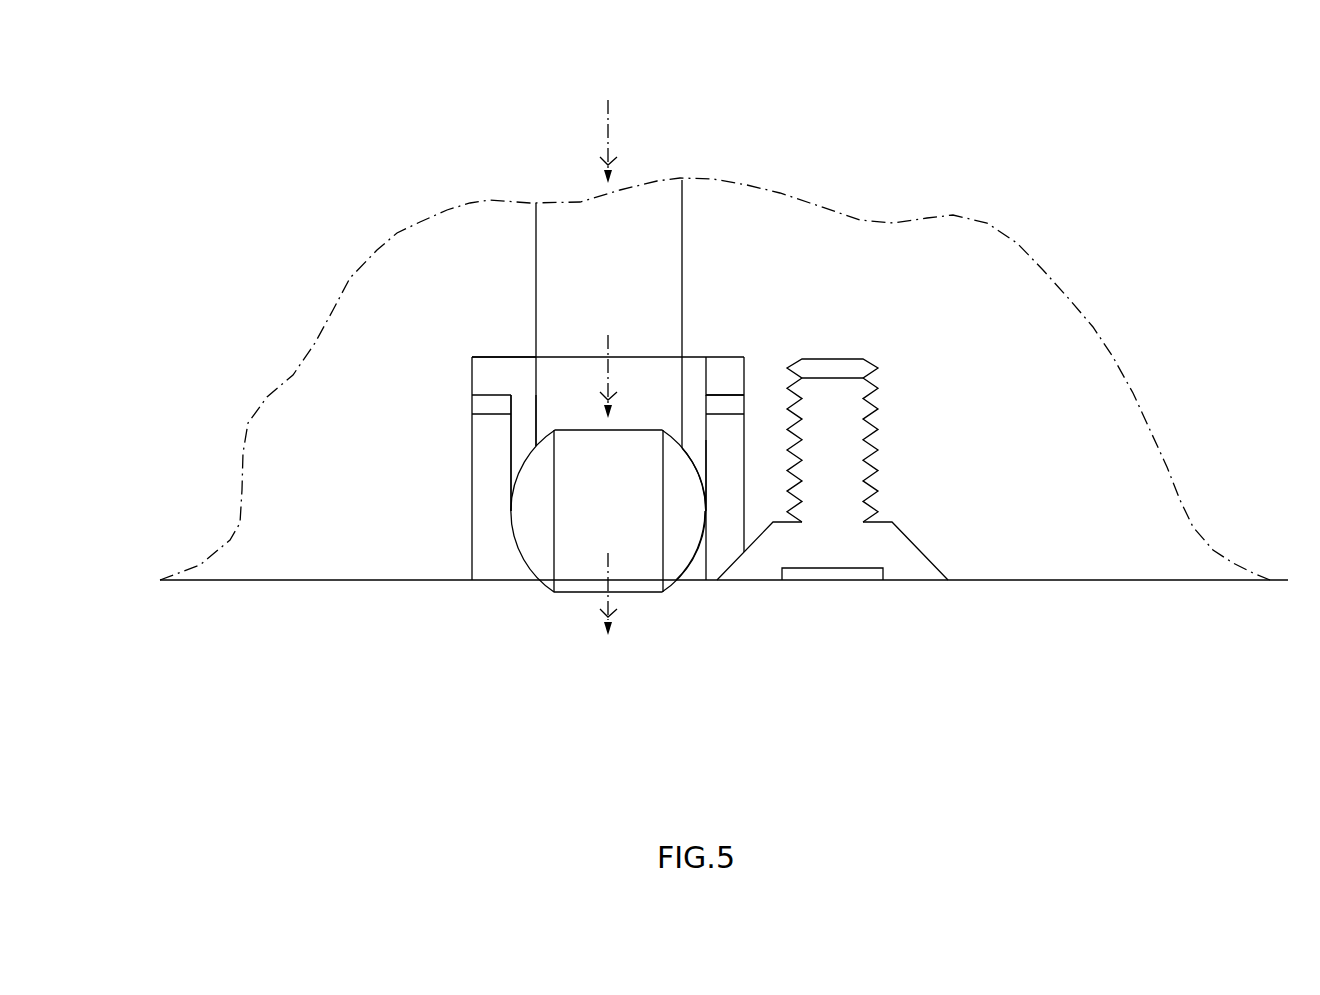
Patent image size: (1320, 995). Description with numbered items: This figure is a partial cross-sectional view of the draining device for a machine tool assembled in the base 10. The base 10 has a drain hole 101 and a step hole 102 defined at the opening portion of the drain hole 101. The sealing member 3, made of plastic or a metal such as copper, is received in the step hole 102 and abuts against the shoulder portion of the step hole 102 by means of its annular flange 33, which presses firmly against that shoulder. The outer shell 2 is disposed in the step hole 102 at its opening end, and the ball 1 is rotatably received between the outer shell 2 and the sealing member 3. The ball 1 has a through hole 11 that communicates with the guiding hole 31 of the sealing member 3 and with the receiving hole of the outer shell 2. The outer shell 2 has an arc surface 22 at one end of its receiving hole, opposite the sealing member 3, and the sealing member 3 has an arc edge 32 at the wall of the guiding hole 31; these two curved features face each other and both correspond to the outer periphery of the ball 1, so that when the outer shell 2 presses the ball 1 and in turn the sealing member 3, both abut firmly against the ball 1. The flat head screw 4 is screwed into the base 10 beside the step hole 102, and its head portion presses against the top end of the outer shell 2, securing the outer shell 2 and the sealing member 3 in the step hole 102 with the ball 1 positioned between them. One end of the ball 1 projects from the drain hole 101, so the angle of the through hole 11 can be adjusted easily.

The ball 1 is at (673, 550).
The through hole 11 is at (580, 578).
The outer shell 2 is at (500, 553).
The arc surface 22 is at (697, 541).
The sealing member 3 is at (688, 420).
The guiding hole 31 is at (537, 396).
The arc edge 32 is at (705, 462).
The annular flange 33 is at (744, 367).
The flat head screw 4 is at (858, 552).
The base 10 is at (297, 553).
The drain hole 101 is at (681, 235).
The step hole 102 is at (473, 359).